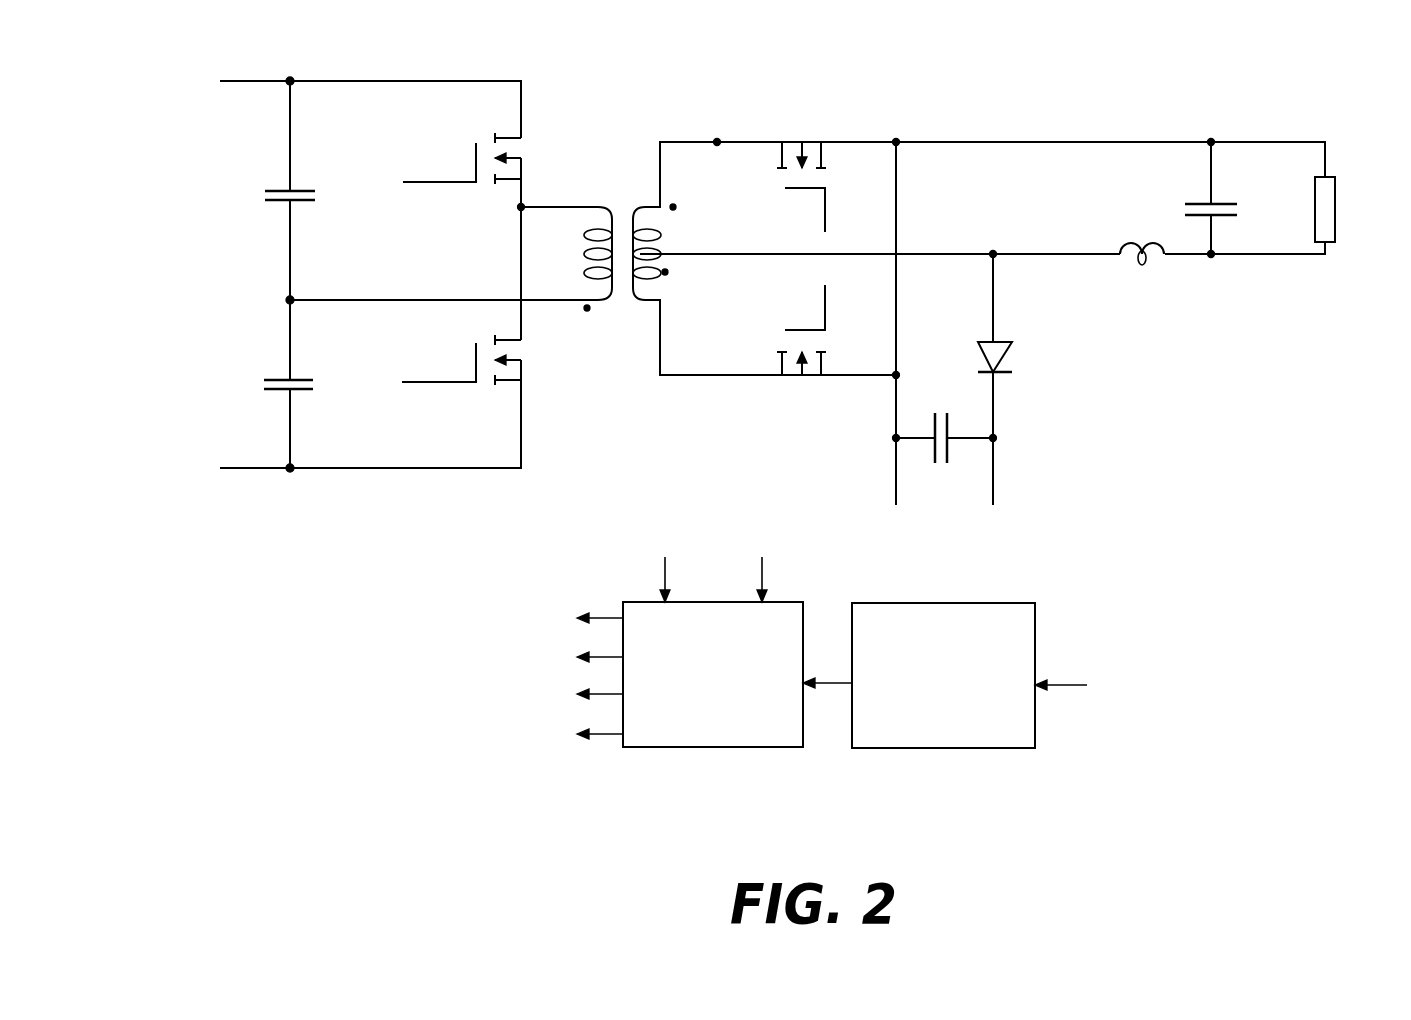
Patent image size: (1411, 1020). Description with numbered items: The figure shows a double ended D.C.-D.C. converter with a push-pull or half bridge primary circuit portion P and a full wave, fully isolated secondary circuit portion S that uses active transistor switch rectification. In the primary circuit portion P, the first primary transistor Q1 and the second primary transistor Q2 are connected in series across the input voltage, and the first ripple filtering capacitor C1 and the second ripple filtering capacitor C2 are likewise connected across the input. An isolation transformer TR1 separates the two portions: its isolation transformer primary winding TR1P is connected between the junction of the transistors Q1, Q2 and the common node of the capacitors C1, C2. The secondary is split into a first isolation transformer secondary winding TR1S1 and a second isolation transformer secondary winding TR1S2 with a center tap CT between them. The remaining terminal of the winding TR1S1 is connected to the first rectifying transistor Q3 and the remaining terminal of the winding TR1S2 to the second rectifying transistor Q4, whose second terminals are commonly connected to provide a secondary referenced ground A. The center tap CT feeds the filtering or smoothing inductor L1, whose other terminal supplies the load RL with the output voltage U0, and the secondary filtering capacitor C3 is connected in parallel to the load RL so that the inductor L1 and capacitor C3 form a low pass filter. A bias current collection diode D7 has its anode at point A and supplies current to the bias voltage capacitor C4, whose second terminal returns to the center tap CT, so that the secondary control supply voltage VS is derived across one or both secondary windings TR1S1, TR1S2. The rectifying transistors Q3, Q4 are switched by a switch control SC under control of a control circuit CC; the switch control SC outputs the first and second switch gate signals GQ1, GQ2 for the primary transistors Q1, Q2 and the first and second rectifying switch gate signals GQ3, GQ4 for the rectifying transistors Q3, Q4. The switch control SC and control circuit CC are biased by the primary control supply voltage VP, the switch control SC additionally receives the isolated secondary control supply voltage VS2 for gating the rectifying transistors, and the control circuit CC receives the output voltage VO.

The primary circuit portion P is at (291, 68).
The secondary circuit portion S is at (934, 124).
The secondary referenced ground A is at (895, 128).
The first ripple filtering capacitor C1 is at (280, 190).
The second ripple filtering capacitor C2 is at (278, 380).
The secondary filtering capacitor C3 is at (1195, 203).
The bias voltage capacitor C4 is at (947, 428).
The center tap CT is at (753, 253).
The first primary transistor Q1 is at (476, 144).
The second primary transistor Q2 is at (476, 344).
The first rectifying transistor Q3 is at (803, 190).
The second rectifying transistor Q4 is at (808, 330).
The isolation transformer TR1 is at (605, 263).
The isolation transformer primary winding TR1P is at (580, 307).
The first isolation transformer secondary winding TR1S1 is at (647, 200).
The second isolation transformer secondary winding TR1S2 is at (648, 305).
The bias current collection diode D7 is at (1040, 365).
The filtering or smoothing inductor L1 is at (1118, 242).
The load RL is at (1313, 205).
The output voltage U0 is at (1362, 182).
The secondary control supply voltage VS is at (944, 493).
The secondary control supply voltage input VS2 is at (765, 562).
The primary control supply voltage VP is at (667, 562).
The output voltage VO is at (1079, 687).
The first switch gate signal GQ1 is at (569, 624).
The second switch gate signal GQ2 is at (569, 662).
The first rectifying switch gate signal GQ3 is at (569, 699).
The second rectifying switch gate signal GQ4 is at (569, 739).
The switch control SC is at (707, 747).
The control circuit CC is at (935, 748).